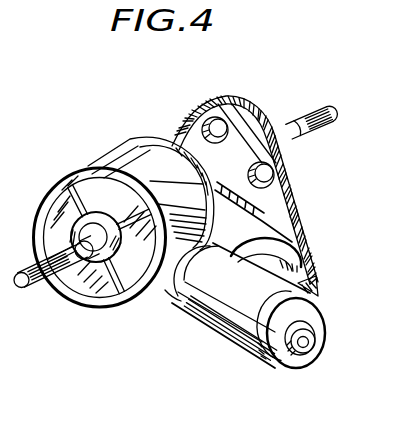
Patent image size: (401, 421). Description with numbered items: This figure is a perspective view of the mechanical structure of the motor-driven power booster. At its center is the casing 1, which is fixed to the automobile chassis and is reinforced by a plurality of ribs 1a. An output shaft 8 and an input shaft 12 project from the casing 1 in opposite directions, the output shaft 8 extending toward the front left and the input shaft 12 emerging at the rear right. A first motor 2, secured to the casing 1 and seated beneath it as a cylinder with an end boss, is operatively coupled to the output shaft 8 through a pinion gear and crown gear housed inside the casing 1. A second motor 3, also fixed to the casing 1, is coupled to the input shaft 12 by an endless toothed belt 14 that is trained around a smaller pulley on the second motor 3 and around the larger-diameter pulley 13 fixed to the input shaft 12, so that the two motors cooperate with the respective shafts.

The casing 1 is at (138, 144).
The ribs 1a is at (78, 187).
The output shaft 8 is at (76, 258).
The larger-diameter pulley 13 is at (250, 128).
The endless toothed belt 14 is at (306, 217).
The input shaft 12 is at (292, 120).
The first motor 2 is at (232, 323).
The second motor 3 is at (311, 292).